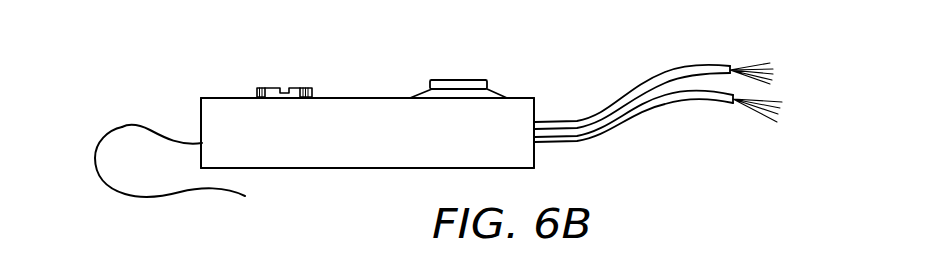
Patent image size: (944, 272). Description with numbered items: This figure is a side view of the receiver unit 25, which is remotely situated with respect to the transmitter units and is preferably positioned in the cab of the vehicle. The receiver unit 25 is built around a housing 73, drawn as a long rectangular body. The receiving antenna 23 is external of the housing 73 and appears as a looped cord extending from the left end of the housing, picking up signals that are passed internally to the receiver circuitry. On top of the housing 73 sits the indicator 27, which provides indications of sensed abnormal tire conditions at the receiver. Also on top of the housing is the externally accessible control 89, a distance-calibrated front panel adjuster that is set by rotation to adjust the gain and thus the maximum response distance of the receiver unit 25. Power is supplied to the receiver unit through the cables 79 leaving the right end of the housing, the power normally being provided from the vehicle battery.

The receiving antenna 23 is at (122, 127).
The receiver unit 25 is at (232, 97).
The indicator 27 is at (470, 79).
The housing 73 is at (357, 143).
The cables 79 is at (625, 119).
The externally accessible control 89 is at (313, 93).